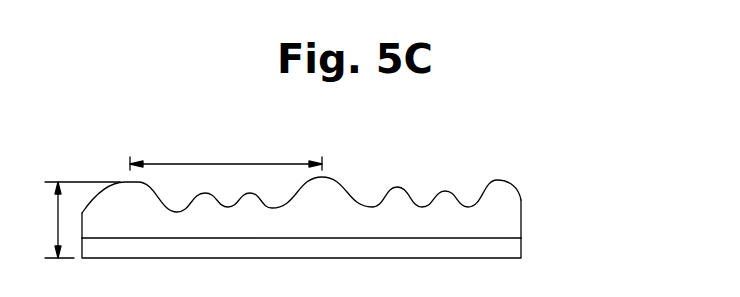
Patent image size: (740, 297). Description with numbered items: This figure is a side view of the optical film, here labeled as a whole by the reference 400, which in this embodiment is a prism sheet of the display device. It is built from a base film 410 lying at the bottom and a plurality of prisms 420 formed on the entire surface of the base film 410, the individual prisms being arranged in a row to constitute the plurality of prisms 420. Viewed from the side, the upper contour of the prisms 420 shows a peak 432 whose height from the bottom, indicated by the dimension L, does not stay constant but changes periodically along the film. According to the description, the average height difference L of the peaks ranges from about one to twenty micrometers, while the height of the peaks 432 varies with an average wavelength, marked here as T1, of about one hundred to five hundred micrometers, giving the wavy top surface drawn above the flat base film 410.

The light guide plate / optical sheet 400 is at (556, 148).
The base film 410 is at (522, 248).
The plurality of prisms 420 is at (522, 212).
The peak 432 is at (340, 181).
The height of the peak L is at (79, 220).
The pattern period dimension T1 is at (226, 152).